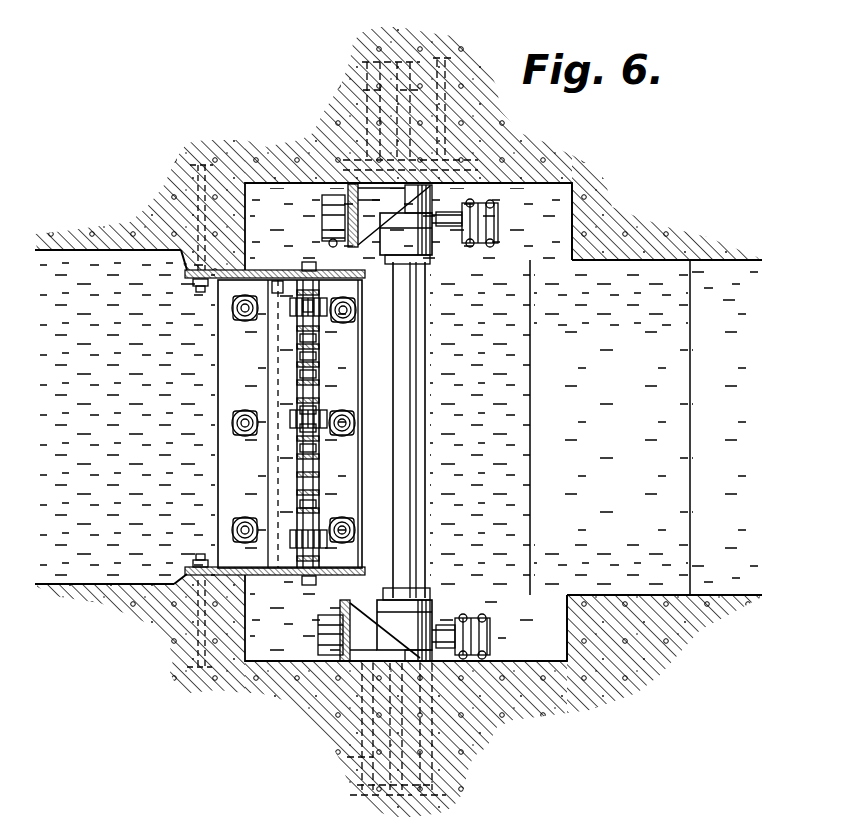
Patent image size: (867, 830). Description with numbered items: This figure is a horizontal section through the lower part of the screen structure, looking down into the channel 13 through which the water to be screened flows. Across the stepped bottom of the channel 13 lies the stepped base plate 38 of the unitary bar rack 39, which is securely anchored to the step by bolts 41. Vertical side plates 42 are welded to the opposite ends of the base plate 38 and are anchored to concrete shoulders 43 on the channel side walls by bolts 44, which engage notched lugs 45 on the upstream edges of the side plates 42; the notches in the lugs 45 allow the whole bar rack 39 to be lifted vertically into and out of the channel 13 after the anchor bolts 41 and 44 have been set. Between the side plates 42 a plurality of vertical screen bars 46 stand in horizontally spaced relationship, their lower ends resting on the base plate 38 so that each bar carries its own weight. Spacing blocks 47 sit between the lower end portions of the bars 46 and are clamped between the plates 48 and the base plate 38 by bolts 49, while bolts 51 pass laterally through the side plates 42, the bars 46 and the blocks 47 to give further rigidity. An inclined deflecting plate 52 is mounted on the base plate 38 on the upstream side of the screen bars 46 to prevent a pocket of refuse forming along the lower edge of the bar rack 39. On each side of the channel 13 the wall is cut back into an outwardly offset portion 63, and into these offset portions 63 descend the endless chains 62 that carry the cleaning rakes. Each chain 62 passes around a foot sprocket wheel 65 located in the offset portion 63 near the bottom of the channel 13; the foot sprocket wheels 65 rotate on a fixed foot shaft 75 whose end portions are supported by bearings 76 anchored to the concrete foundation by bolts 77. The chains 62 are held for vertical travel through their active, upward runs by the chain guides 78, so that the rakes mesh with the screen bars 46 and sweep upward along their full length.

The channel 13 is at (610, 427).
The base plate 38 is at (218, 479).
The bar rack 39 is at (327, 474).
The bolts 41 is at (247, 321).
The side plates 42 is at (300, 270).
The concrete shoulders 43 is at (184, 273).
The bolts 44 is at (206, 220).
The notched lugs 45 is at (198, 290).
The screen bars 46 is at (297, 385).
The spacing blocks 47 is at (296, 424).
The plates 48 is at (318, 354).
The bolts 49 is at (330, 301).
The bolts 51 is at (316, 271).
The inclined deflecting plate 52 is at (272, 291).
The endless chains 62 is at (498, 218).
The outwardly offset portions 63 is at (570, 232).
The foot sprocket wheel 65 is at (455, 228).
The foot shaft 75 is at (426, 526).
The bearings 76 is at (432, 248).
The bolts 77 is at (386, 50).
The chain guides 78 is at (318, 641).